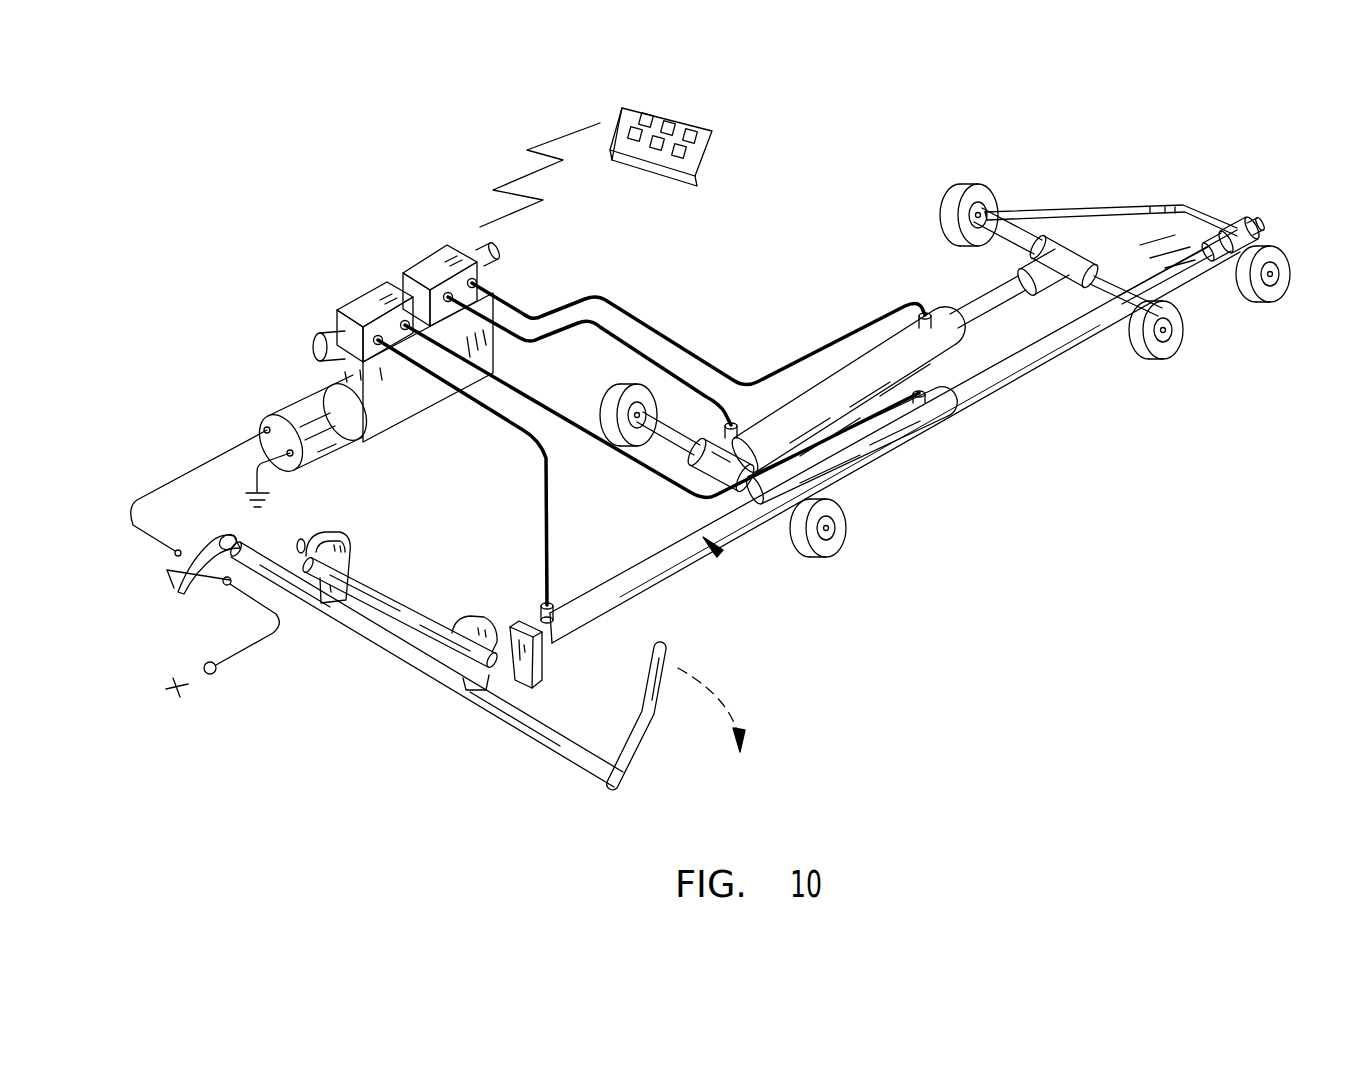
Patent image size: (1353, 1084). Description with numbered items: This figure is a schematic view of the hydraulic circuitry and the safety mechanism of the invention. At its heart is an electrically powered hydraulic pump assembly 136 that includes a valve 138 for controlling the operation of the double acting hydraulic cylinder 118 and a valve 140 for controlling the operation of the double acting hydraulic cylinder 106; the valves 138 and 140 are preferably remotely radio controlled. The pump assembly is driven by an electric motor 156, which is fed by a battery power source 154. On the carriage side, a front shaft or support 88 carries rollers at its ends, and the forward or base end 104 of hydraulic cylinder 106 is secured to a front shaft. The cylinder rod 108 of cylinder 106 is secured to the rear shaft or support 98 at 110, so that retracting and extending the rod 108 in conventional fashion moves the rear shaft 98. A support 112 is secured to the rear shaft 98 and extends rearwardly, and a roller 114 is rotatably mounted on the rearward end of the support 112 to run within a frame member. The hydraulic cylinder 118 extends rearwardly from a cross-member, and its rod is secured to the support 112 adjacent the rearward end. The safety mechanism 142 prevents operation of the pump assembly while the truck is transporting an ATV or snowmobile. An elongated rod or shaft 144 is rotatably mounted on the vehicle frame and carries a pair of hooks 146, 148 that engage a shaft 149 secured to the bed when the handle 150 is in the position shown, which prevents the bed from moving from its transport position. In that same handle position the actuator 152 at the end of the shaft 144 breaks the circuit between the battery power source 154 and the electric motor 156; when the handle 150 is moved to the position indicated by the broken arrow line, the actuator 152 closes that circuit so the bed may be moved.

The hydraulic pump assembly 136 is at (402, 242).
The valve 138 is at (363, 305).
The valve 140 is at (488, 258).
The electric motor 156 is at (287, 398).
The actuator 152 is at (210, 541).
The battery power source 154 is at (200, 683).
The hook 148 is at (328, 530).
The safety mechanism 142 is at (402, 543).
The shaft 149 is at (410, 607).
The hook 146 is at (470, 617).
The elongated rod or shaft 144 is at (517, 720).
The handle 150 is at (647, 750).
The hydraulic cylinder 118 is at (722, 553).
The front shaft or support 88 is at (673, 440).
The forward or base end 104 is at (707, 470).
The hydraulic cylinder 106 is at (937, 360).
The cylinder rod 108 is at (987, 313).
The rear shaft or support 98 is at (1010, 233).
The connection of cylinder rod to rear shaft 110 is at (1067, 250).
The support 112 is at (1167, 257).
The roller 114 is at (1288, 300).